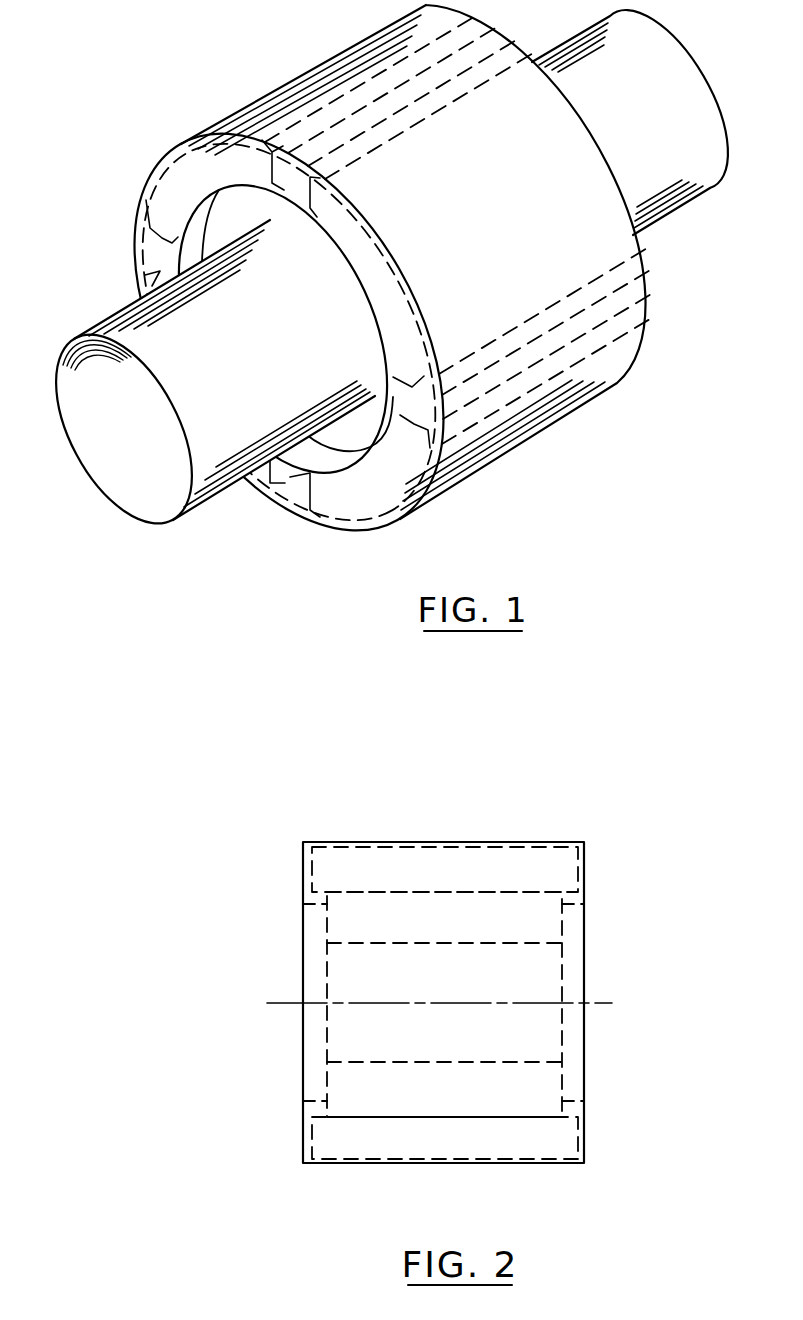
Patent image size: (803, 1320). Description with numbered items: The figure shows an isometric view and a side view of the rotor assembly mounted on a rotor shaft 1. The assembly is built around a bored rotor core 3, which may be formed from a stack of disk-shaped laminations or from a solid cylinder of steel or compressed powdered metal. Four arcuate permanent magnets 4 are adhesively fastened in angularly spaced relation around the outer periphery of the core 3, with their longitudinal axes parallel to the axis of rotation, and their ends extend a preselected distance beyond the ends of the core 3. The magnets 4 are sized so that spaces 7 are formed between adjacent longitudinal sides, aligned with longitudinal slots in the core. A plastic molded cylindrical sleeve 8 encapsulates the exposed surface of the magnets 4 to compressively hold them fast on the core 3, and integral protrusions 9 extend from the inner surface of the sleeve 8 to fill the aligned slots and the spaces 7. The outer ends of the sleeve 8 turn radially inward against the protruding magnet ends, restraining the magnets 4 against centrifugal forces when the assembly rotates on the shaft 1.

In FIG. 1, the rotor shaft 1 is at (231, 359).
In FIG. 1, the rotor core 3 is at (231, 224).
In FIG. 2, the rotor core 3 is at (436, 932).
In FIG. 1, the arcuate permanent magnets 4 is at (321, 96).
In FIG. 2, the arcuate permanent magnets 4 is at (434, 882).
In FIG. 1, the spaces 7 is at (369, 122).
In FIG. 2, the plastic molded cylindrical sleeve 8 is at (585, 872).
In FIG. 1, the integral protrusions 9 is at (141, 259).